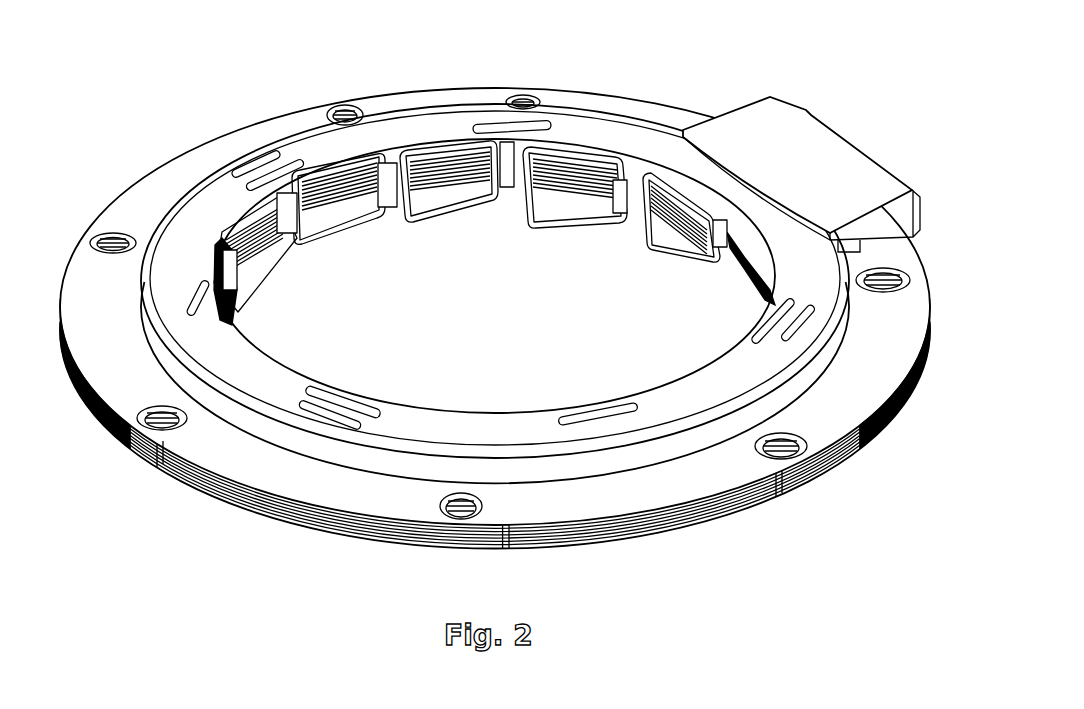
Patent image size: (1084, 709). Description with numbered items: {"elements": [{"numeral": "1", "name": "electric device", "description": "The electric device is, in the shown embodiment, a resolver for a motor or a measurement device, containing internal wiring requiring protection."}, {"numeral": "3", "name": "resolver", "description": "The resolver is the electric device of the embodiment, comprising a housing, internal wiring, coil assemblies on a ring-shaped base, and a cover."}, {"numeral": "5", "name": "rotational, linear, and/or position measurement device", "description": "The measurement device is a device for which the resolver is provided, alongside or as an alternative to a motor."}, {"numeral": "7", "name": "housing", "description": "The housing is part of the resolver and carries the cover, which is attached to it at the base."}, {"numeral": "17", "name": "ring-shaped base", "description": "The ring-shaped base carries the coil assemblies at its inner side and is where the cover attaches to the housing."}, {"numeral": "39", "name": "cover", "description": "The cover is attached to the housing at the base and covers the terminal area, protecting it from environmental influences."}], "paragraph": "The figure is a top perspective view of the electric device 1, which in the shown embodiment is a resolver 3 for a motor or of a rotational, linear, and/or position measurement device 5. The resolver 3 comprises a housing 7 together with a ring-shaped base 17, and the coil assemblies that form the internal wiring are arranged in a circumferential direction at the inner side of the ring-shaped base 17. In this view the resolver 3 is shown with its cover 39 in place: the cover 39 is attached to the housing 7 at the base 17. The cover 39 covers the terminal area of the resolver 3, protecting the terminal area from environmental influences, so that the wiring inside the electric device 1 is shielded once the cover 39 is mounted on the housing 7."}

The stator 1 is at (493, 304).
The stator assembly 3 is at (493, 304).
The electric motor stator unit 5 is at (493, 304).
The stator housing ring 7 is at (142, 355).
The mounting flange 17 is at (247, 424).
The end ring top face 39 is at (630, 146).